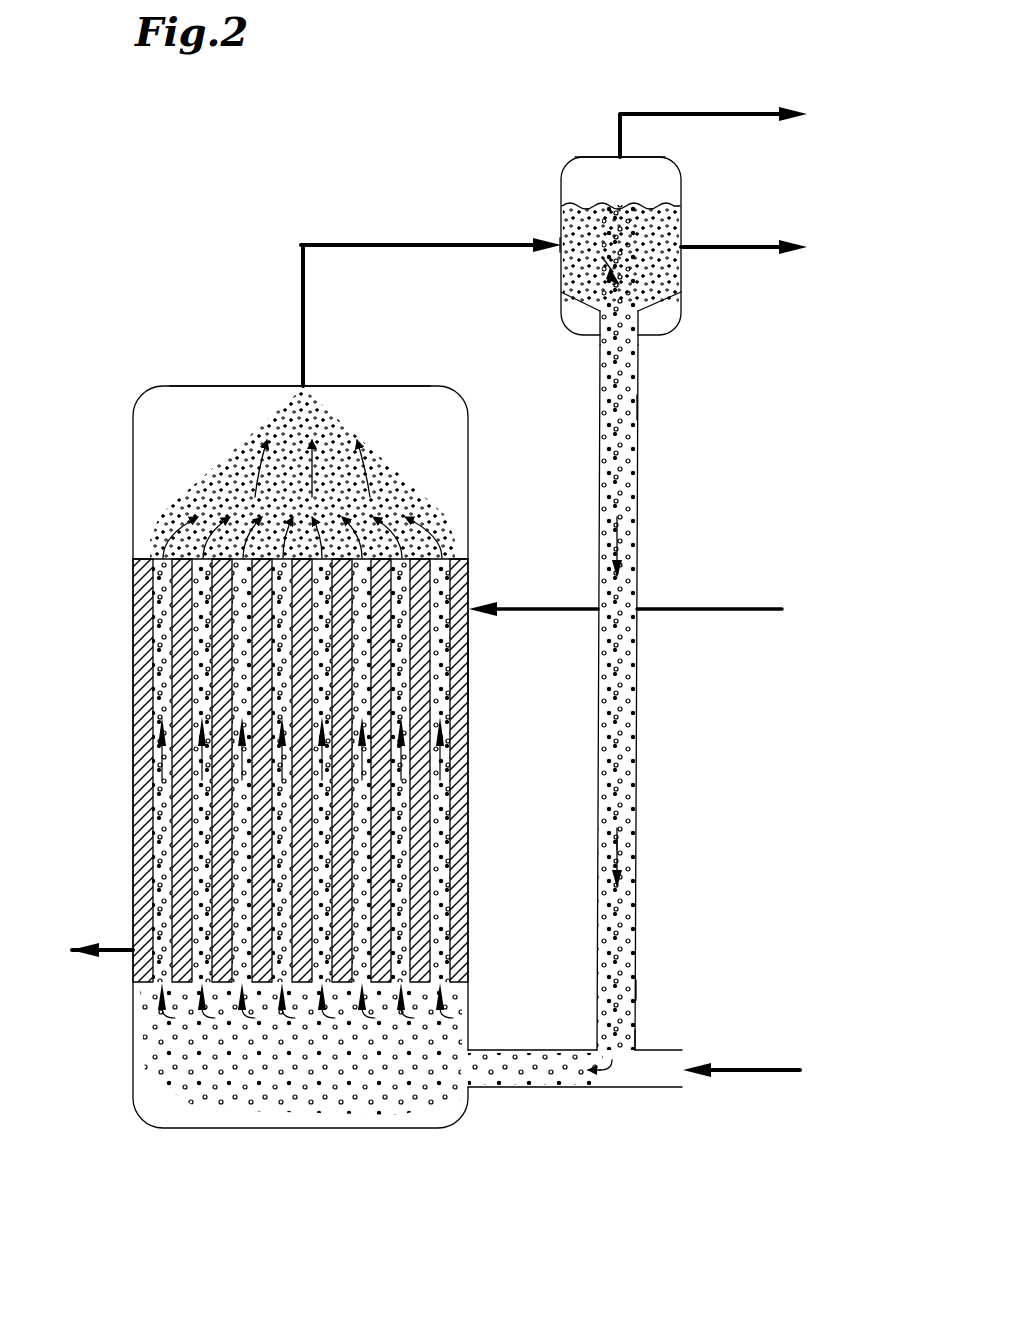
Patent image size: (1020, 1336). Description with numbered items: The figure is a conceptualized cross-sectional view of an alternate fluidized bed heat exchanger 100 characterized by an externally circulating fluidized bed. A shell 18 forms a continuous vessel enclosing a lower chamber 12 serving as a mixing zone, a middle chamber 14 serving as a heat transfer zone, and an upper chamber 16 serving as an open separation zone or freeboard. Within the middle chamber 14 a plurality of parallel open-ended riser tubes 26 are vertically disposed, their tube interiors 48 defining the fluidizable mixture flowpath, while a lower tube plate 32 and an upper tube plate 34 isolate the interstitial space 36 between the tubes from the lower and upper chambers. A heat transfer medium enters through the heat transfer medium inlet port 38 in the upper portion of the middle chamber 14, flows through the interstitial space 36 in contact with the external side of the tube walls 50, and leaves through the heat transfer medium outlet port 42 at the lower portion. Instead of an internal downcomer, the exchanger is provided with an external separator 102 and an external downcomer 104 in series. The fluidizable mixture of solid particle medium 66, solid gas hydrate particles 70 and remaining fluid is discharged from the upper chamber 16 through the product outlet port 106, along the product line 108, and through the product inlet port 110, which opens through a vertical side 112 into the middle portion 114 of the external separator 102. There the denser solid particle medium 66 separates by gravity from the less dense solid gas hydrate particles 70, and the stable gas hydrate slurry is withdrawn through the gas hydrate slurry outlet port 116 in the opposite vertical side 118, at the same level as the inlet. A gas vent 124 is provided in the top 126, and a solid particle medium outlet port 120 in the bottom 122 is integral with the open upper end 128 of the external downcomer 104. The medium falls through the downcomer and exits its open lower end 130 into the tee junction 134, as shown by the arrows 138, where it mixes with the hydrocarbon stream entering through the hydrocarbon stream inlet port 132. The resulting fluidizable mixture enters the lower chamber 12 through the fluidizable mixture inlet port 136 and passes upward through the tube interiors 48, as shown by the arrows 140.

The lower chamber 12 is at (215, 1128).
The middle chamber 14 is at (134, 758).
The upper chamber 16 is at (158, 455).
The shell 18 is at (205, 385).
The riser tubes 26 is at (470, 852).
The lower tube plate 32 is at (462, 990).
The upper tube plate 34 is at (470, 560).
The interstitial space 36 is at (470, 668).
The heat transfer medium inlet port 38 is at (472, 615).
The heat transfer medium outlet port 42 is at (120, 940).
The tube interiors 48 is at (160, 560).
The tube walls 50 is at (155, 595).
The solid particle medium 66 is at (616, 729).
The solid gas hydrate particles 70 is at (665, 237).
The fluidized bed heat exchanger 100 is at (248, 200).
The external separator 102 is at (560, 195).
The external downcomer 104 is at (637, 678).
The product outlet port 106 is at (300, 385).
The product line 108 is at (385, 245).
The product inlet port 110 is at (560, 240).
The vertical side 112 is at (560, 290).
The middle portion 114 is at (560, 252).
The gas hydrate slurry outlet port 116 is at (683, 252).
The opposite vertical side 118 is at (683, 195).
The solid particle medium outlet port 120 is at (650, 337).
The bottom 122 is at (585, 337).
The gas vent 124 is at (615, 156).
The top 126 is at (590, 157).
The open upper end 128 is at (637, 410).
The open lower end 130 is at (636, 992).
The hydrocarbon stream inlet port 132 is at (660, 1090).
The tee junction 134 is at (637, 1042).
The fluidizable mixture inlet port 136 is at (470, 1090).
The arrows 138 is at (635, 852).
The arrows 140 is at (185, 1006).